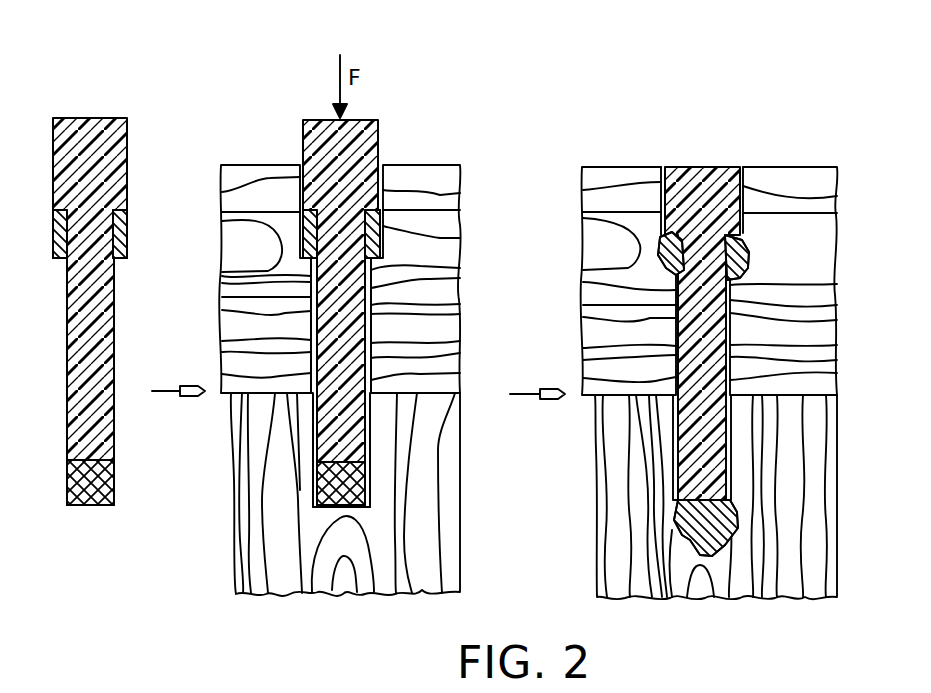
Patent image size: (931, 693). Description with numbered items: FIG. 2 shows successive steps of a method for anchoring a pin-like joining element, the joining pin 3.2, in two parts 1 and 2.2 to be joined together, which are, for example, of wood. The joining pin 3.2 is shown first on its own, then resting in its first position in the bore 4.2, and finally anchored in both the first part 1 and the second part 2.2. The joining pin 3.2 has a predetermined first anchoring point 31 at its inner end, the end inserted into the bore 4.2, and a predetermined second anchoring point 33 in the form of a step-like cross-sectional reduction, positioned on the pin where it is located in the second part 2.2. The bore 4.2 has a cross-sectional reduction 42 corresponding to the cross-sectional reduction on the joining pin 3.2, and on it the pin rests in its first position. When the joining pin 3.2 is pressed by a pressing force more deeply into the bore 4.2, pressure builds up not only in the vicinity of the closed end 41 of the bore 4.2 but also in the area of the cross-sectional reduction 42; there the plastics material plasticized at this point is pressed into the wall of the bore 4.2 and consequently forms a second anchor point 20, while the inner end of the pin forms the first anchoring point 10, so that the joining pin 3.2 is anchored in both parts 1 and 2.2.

The first part 1 is at (252, 558).
The second part 2.2 is at (425, 182).
The joining pin 3.2 is at (79, 112).
The bore 4.2 is at (318, 440).
The anchoring point 10 is at (742, 522).
The second anchor point 20 is at (755, 258).
The first anchoring point 31 is at (90, 503).
The second anchoring point 33 is at (118, 228).
The closed end 41 is at (368, 489).
The cross-sectional reduction 42 is at (457, 275).